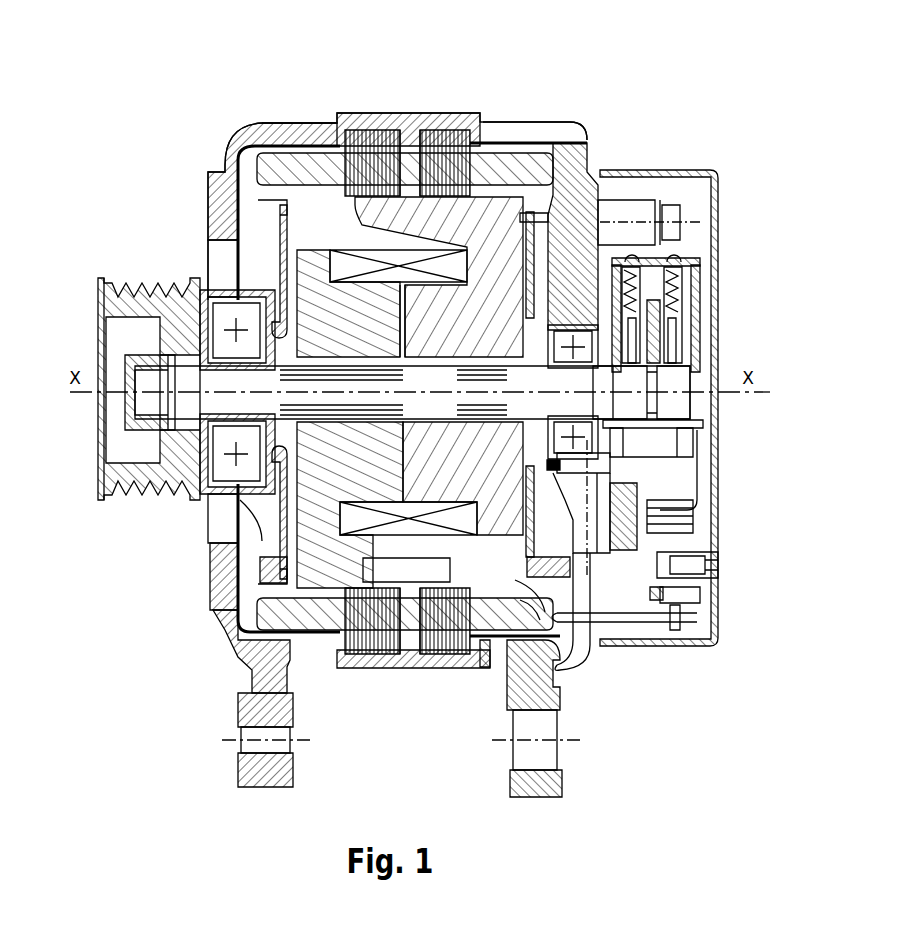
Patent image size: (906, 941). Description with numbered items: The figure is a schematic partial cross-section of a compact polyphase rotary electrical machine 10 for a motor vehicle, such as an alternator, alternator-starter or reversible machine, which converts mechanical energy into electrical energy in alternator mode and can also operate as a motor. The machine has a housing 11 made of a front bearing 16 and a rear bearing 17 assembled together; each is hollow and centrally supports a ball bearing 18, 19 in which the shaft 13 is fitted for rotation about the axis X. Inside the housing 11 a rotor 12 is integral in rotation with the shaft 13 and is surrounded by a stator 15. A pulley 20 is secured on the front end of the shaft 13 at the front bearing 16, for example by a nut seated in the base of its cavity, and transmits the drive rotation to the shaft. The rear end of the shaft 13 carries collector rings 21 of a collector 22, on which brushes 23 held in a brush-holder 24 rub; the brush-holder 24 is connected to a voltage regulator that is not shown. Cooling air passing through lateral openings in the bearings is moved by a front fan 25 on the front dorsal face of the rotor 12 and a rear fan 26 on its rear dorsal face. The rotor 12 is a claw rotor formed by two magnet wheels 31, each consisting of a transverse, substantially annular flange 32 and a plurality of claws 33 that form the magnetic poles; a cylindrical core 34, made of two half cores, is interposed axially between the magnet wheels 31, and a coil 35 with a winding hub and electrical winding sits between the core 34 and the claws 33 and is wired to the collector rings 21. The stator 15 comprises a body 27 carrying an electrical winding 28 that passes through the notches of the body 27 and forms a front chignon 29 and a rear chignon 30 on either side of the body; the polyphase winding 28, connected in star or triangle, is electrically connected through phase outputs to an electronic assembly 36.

The rotary electrical machine 10 is at (146, 84).
The housing 11 is at (215, 130).
The rotor 12 is at (305, 218).
The shaft 13 is at (218, 404).
The stator 15 is at (567, 160).
The front bearing 16 is at (217, 255).
The rear bearing 17 is at (630, 497).
The ball bearing 18 is at (157, 473).
The ball bearing 19 is at (630, 477).
The pulley 20 is at (130, 358).
The collector rings 21 is at (633, 407).
The collector 22 is at (697, 440).
The brushes 23 is at (680, 333).
The brush-holder 24 is at (697, 283).
The front fan 25 is at (253, 568).
The rear fan 26 is at (720, 563).
The body 27 is at (383, 128).
The electrical winding 28 is at (305, 160).
The front chignon 29 is at (267, 128).
The rear chignon 30 is at (537, 167).
The magnet wheels 31 is at (262, 543).
The flange 32 is at (600, 223).
The claws 33 is at (433, 128).
The cylindrical core 34 is at (497, 552).
The coil 35 is at (435, 490).
The electronic assembly 36 is at (667, 597).